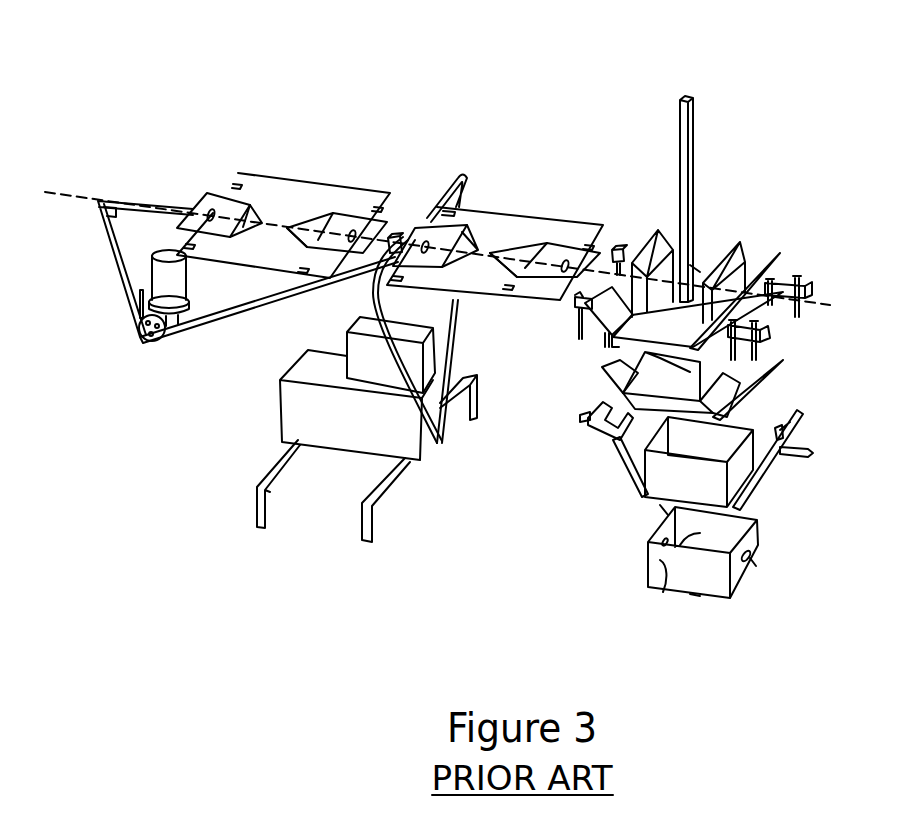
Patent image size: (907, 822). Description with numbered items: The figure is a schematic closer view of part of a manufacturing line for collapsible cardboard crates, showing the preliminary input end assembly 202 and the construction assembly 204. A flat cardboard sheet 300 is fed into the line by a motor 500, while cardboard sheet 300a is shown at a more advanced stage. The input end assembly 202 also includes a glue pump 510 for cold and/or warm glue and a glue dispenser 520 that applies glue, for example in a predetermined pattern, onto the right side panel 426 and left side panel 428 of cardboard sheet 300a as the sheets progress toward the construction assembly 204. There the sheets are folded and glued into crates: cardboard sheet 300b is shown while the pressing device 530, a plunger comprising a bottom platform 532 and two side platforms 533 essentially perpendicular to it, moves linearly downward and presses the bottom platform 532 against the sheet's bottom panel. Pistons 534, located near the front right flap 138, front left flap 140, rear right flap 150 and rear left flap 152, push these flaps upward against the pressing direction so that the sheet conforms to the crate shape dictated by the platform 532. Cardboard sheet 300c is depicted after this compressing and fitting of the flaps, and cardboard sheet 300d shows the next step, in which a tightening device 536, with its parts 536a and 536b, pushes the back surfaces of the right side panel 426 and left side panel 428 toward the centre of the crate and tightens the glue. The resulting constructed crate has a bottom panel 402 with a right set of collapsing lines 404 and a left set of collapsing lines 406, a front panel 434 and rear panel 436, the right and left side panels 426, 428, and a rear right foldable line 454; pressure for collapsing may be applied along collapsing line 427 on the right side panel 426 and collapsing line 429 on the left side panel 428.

The front right flap 138 is at (770, 330).
The front left flap 140 is at (598, 325).
The rear right flap 150 is at (783, 252).
The rear left flap 152 is at (690, 265).
The preliminary (input end) assembly 202 is at (418, 112).
The construction assembly 204 is at (730, 110).
The cardboard sheet 300 is at (283, 193).
The cardboard sheet 300a is at (513, 233).
The cardboard sheet 300b is at (750, 270).
The cardboard sheet 300c is at (743, 362).
The cardboard sheet 300d is at (775, 485).
The bottom panel 402 is at (717, 600).
The right set of collapsing lines 404 is at (307, 228).
The left set of collapsing lines 406 is at (272, 200).
The right side panel 426 is at (553, 253).
The collapsing line 427 is at (753, 562).
The left side panel 428 is at (417, 224).
The collapsing line 429 is at (657, 535).
The front panel 434 is at (697, 597).
The rear panel 436 is at (660, 505).
The rear right (RR) foldable line 454 is at (757, 543).
The motor 500 is at (112, 265).
The glue pump 510 is at (280, 412).
The glue dispenser 520 is at (450, 180).
The pressing device 530 is at (692, 118).
The bottom platform 532 is at (603, 338).
The side platforms 533 is at (653, 230).
The pistons 534 is at (620, 247).
The tightening device 536 is at (800, 440).
The blade 536a is at (762, 495).
The blade 536b is at (623, 470).